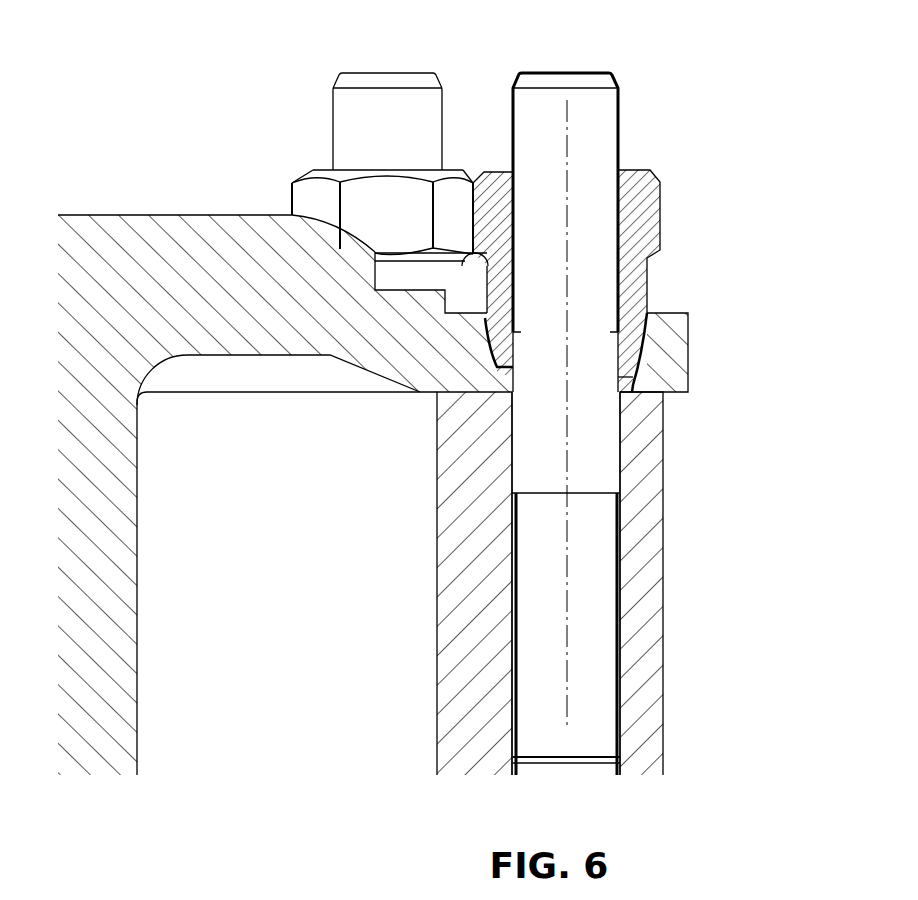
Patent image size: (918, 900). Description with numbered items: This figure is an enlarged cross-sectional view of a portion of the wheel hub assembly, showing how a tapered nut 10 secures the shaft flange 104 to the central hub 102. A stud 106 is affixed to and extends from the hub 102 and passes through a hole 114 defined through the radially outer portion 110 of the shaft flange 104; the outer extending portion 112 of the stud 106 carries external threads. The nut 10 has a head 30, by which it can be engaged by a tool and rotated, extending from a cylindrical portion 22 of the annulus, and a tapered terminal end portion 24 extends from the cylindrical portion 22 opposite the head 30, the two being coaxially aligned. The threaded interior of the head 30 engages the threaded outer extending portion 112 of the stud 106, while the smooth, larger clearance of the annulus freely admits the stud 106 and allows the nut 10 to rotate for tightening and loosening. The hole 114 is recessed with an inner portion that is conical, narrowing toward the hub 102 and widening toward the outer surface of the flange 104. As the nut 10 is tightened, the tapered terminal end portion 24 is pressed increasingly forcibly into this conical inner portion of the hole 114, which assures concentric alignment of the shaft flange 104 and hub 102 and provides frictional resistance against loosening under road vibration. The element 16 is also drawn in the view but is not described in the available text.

The tapered nut 10 is at (688, 211).
The tube 16 is at (567, 581).
The cylindrical portion 22 is at (647, 279).
The tapered terminal end portion 24 is at (645, 344).
The head 30 is at (302, 183).
The central hub 102 is at (663, 725).
The shaft flange 104 is at (258, 306).
The stud 106 is at (375, 72).
The radially outer portion 110 is at (688, 358).
The outer extending portion 112 is at (583, 200).
The hole 114 is at (497, 353).